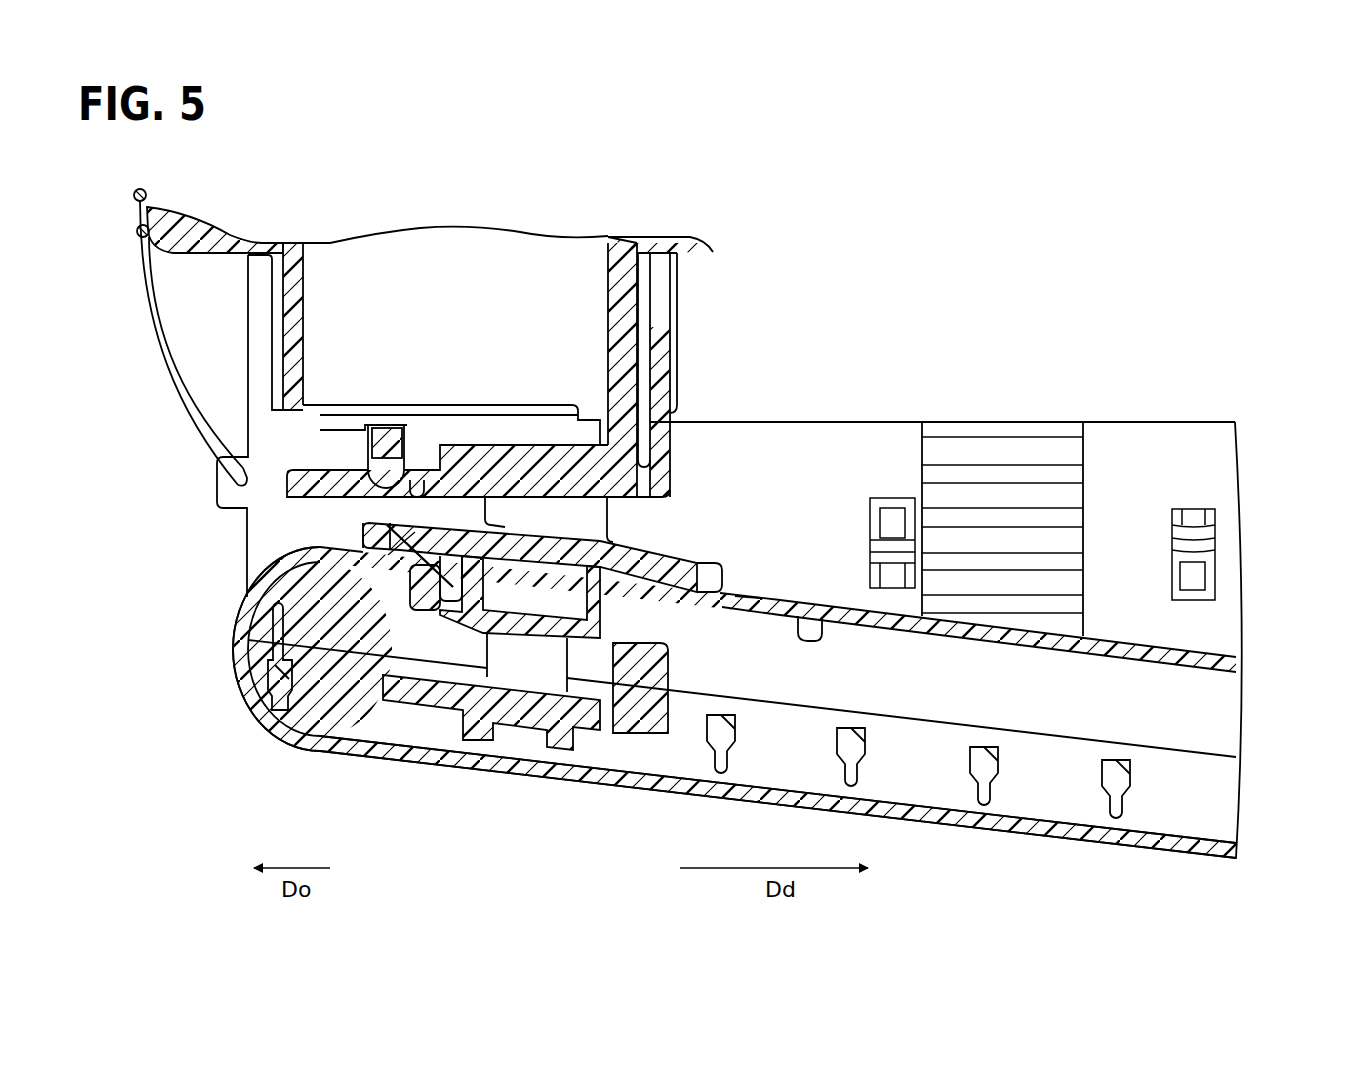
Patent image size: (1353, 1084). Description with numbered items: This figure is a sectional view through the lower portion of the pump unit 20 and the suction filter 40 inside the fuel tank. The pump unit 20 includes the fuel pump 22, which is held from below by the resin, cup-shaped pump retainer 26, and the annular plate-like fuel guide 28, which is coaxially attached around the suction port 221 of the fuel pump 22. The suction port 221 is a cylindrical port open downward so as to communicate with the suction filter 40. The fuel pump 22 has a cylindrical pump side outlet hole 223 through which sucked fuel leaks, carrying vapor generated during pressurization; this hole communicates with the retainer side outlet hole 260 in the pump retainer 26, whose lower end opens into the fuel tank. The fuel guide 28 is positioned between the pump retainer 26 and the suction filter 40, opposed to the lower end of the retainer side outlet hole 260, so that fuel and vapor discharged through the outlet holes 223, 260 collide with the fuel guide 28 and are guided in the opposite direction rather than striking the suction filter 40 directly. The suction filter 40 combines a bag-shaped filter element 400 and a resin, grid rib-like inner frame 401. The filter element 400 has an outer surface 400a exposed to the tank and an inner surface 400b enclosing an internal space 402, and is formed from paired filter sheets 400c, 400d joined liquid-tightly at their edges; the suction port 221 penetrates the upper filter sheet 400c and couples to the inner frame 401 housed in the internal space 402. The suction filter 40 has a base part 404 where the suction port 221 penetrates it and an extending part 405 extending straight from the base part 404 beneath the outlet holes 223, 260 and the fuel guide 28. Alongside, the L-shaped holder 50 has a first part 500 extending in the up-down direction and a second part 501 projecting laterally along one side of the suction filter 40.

The pump unit 20 is at (690, 324).
The fuel pump 22 is at (337, 308).
The pump retainer 26 is at (293, 489).
The fuel guide 28 is at (413, 535).
The suction filter 40 is at (776, 640).
The L-shaped holder 50 is at (1245, 481).
The suction port 221 is at (532, 682).
The pump side outlet hole 223 is at (387, 447).
The retainer side outlet hole 260 is at (413, 502).
The filter element 400 is at (497, 605).
The outer surface 400a is at (750, 598).
The inner surface 400b is at (822, 630).
The upper filter sheet 400c is at (247, 612).
The filter sheet 400d is at (243, 660).
The inner frame 401 is at (638, 735).
The internal space 402 is at (380, 640).
The base part 404 is at (598, 784).
The extending part 405 is at (284, 737).
The first part 500 is at (253, 343).
The second part 501 is at (1185, 437).